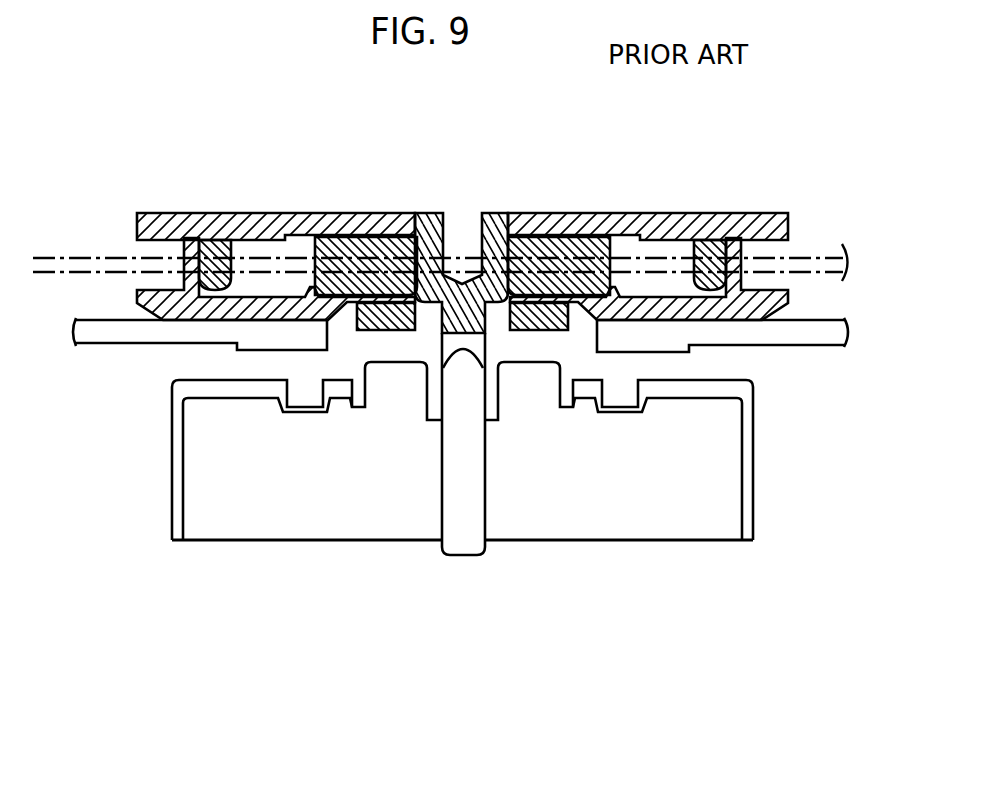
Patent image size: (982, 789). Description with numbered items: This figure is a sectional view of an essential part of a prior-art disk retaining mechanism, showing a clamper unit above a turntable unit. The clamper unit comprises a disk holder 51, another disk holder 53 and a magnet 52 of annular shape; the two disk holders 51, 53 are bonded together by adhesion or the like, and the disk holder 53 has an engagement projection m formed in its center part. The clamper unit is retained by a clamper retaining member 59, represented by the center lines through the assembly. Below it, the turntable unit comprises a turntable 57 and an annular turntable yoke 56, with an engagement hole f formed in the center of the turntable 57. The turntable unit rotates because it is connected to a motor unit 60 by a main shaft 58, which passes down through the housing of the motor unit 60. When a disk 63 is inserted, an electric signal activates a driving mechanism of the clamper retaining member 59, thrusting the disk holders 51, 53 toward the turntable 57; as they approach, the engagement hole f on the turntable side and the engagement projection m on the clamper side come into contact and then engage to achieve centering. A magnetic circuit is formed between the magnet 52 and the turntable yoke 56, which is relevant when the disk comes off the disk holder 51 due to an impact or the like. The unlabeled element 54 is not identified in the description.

The disk holder 51 is at (462, 381).
The magnet 52 is at (598, 247).
The disk holder 53 is at (692, 243).
The cover plate 54 is at (553, 236).
The turntable yoke 56 is at (370, 325).
The turntable 57 is at (173, 362).
The main shaft 58 is at (452, 482).
The clamper retaining member 59 is at (806, 262).
The motor unit 60 is at (577, 518).
The disk 63 is at (795, 333).
The engagement projection m is at (470, 315).
The engagement hole f is at (442, 345).